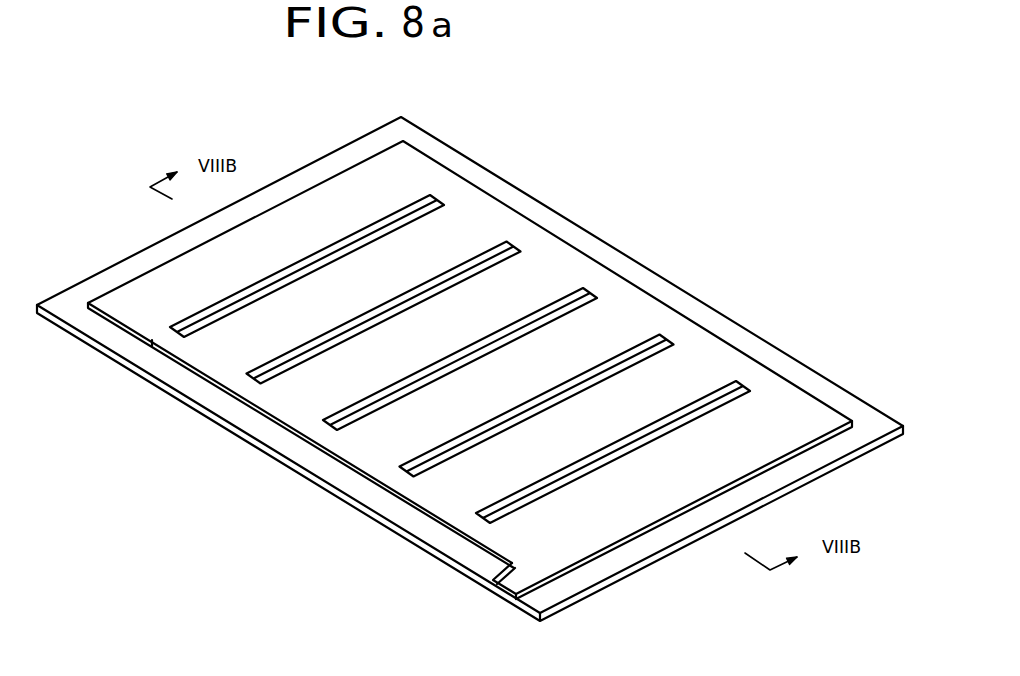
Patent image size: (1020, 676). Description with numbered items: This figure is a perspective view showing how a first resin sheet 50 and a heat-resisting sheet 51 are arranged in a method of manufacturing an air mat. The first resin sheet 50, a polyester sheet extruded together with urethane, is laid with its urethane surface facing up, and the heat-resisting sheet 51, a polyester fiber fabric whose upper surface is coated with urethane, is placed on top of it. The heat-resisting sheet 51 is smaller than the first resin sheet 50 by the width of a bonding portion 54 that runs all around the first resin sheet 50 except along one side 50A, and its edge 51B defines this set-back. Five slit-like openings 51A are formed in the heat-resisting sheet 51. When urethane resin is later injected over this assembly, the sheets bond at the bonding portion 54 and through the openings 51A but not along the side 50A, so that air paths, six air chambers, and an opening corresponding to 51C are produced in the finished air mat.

The first resin sheet 50 is at (652, 282).
The one side 50A is at (486, 598).
The heat-resisting sheet 51 is at (458, 492).
The slit-like openings 51A is at (436, 198).
The edge portion of sheet 51B is at (600, 283).
The opening 51C is at (518, 580).
The bonding portion 54 is at (673, 533).